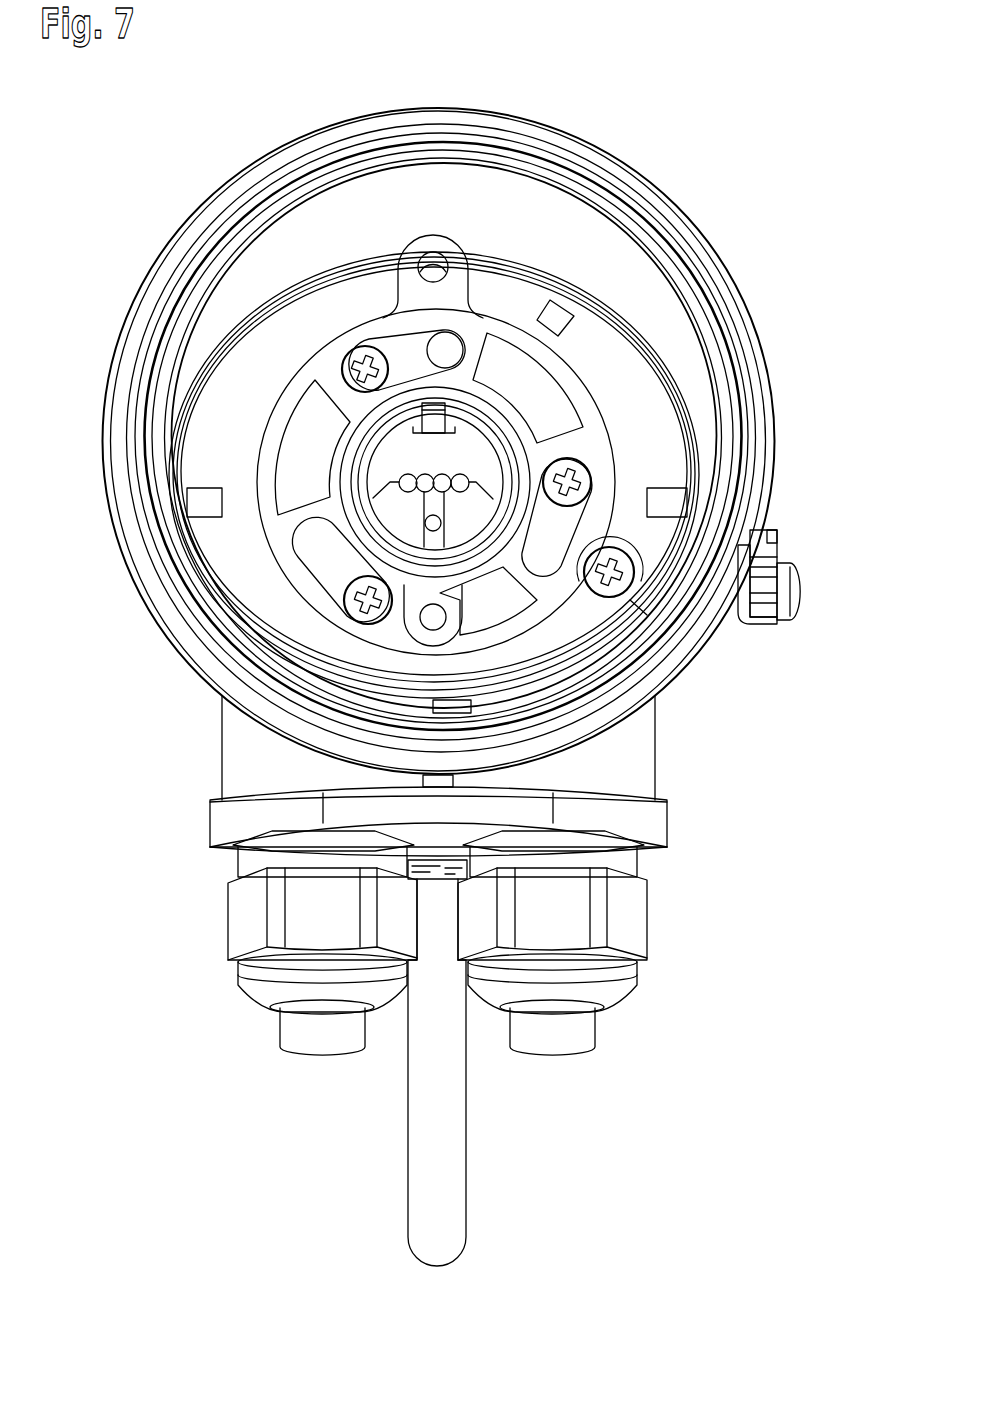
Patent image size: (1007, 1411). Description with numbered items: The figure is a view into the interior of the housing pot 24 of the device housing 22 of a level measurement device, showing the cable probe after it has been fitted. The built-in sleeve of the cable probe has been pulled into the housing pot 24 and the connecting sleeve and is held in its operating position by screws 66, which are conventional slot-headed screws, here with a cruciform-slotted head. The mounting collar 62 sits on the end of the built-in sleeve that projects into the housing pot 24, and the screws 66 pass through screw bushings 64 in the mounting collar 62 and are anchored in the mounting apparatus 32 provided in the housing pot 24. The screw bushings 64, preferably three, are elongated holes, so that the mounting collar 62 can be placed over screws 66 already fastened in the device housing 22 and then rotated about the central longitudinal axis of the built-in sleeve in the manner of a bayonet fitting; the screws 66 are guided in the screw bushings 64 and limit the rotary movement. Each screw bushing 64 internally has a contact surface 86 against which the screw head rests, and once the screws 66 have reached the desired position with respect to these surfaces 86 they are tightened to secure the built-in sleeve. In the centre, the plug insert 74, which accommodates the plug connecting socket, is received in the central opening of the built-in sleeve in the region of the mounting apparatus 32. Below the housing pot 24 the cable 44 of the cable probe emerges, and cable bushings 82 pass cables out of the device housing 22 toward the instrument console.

The device housing 22 is at (800, 472).
The housing pot 24 is at (486, 100).
The mounting apparatus 32 is at (237, 550).
The cable 44 is at (437, 1195).
The mounting collar 62 is at (287, 418).
The screw bushings 64 is at (445, 350).
The screws 66 is at (350, 370).
The plug insert 74 is at (465, 515).
The cable bushings 82 is at (552, 905).
The contact surfaces 86 is at (386, 337).